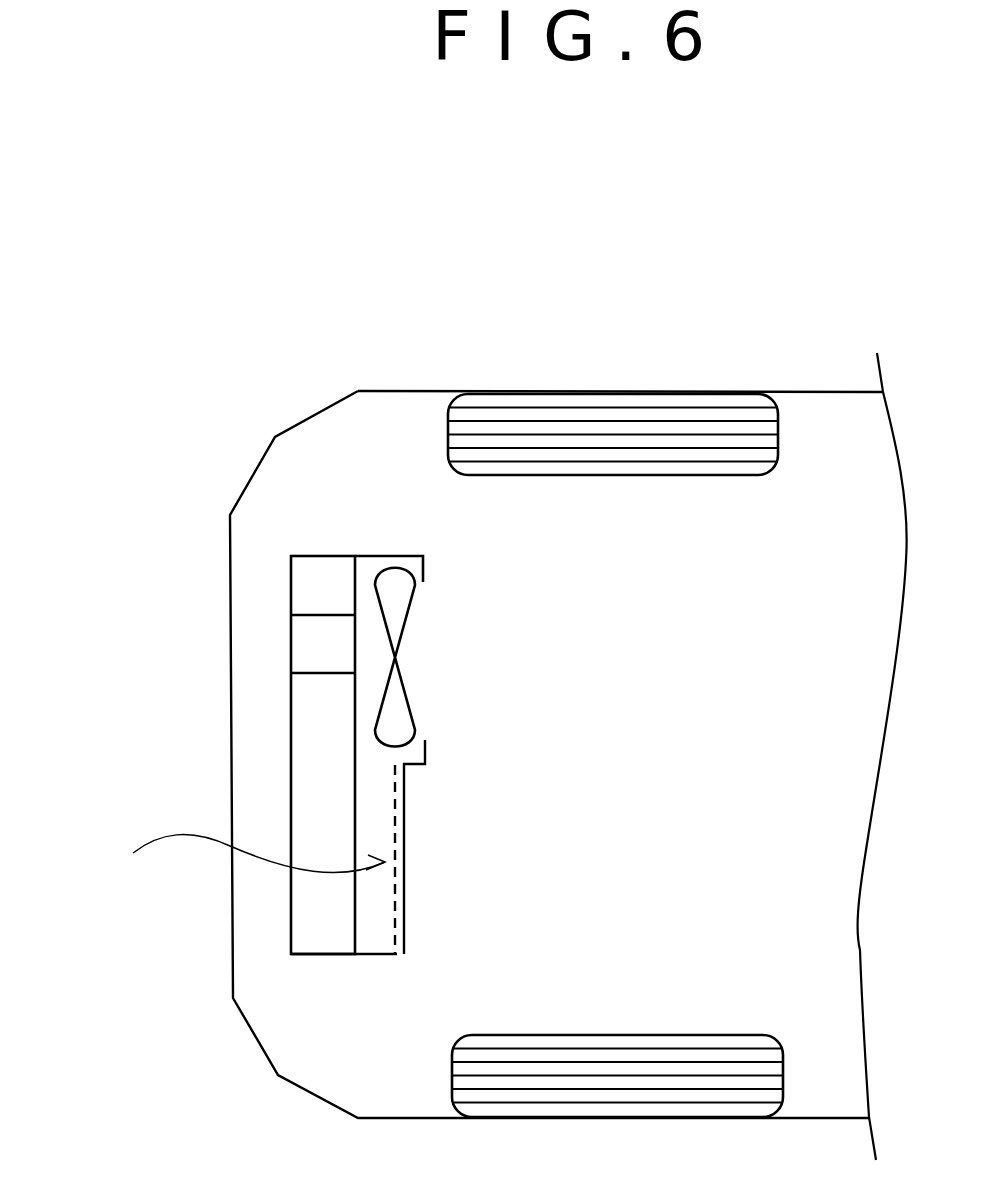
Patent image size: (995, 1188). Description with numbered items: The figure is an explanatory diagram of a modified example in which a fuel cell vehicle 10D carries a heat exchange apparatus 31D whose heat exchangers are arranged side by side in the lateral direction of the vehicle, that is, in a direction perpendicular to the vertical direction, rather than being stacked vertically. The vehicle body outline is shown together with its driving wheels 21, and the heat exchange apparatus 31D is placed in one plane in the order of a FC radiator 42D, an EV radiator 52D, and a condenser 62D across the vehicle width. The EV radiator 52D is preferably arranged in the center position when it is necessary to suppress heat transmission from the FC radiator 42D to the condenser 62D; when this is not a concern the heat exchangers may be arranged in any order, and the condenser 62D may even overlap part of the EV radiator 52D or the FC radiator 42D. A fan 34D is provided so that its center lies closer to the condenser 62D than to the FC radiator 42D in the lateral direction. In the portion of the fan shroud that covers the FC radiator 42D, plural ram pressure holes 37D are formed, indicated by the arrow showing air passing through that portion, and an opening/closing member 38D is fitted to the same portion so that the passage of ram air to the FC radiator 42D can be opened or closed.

The fuel cell vehicle 10D is at (785, 391).
The driving wheel 21 is at (572, 477).
The heat exchange apparatus 31D is at (298, 758).
The EV radiator 52D is at (291, 641).
The condenser 62D is at (327, 556).
The fan 34D is at (410, 603).
The opening/closing member 38D is at (405, 803).
The ram pressure holes 37D is at (219, 853).
The FC radiator 42D is at (315, 956).